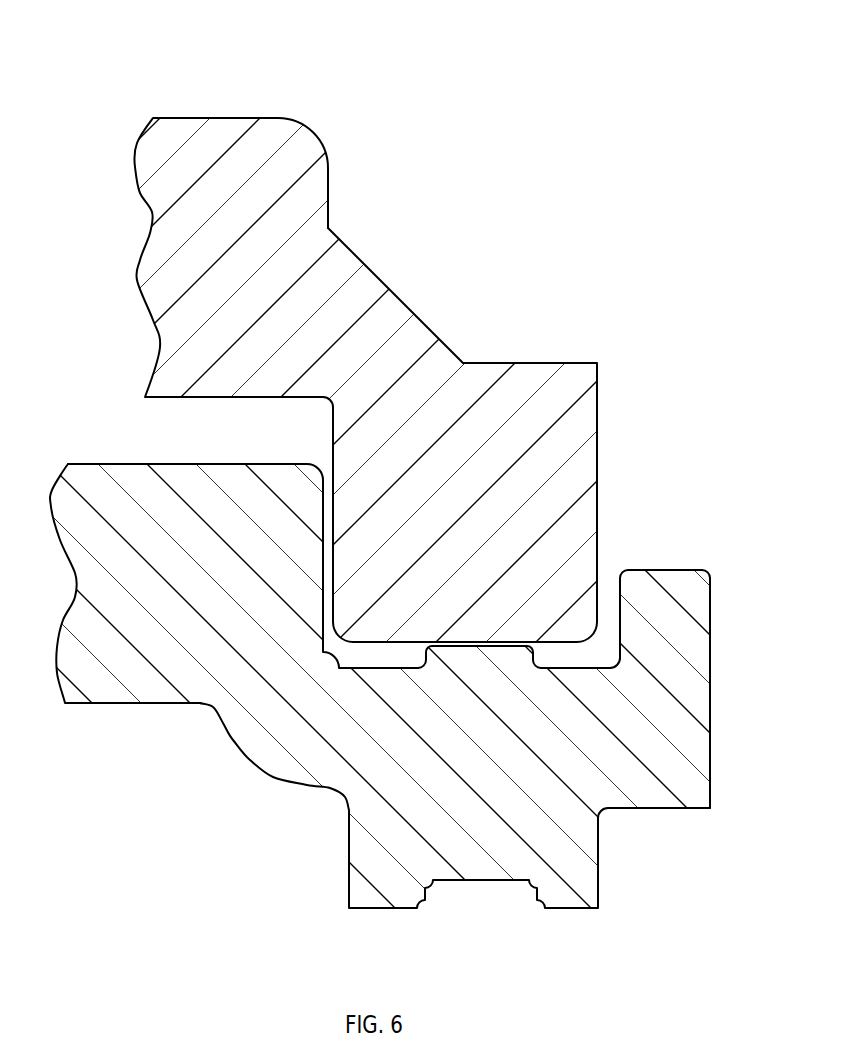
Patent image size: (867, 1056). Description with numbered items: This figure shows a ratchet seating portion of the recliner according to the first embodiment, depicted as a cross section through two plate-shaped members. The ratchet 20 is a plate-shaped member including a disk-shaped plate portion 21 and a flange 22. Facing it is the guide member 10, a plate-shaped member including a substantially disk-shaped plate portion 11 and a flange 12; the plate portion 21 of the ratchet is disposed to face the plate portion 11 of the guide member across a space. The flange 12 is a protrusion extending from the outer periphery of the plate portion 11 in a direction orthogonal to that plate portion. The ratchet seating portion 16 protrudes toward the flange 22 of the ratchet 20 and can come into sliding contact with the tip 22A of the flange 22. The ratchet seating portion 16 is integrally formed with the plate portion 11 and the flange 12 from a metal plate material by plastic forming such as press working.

The guide member 10 is at (119, 713).
The plate portion 11 is at (135, 483).
The flange 12 is at (667, 570).
The ratchet seating portion 16 is at (507, 657).
The ratchet 20 is at (341, 187).
The plate portion 21 is at (228, 130).
The flange 22 is at (598, 417).
The tip 22A is at (485, 640).